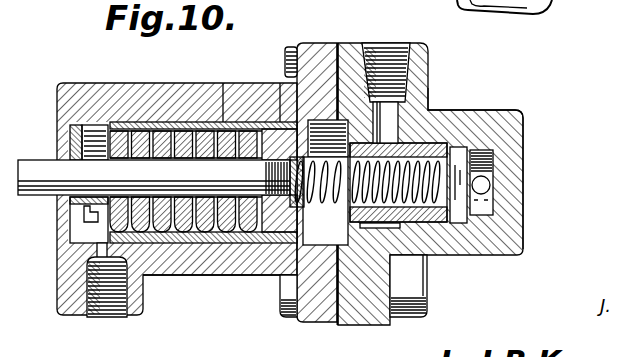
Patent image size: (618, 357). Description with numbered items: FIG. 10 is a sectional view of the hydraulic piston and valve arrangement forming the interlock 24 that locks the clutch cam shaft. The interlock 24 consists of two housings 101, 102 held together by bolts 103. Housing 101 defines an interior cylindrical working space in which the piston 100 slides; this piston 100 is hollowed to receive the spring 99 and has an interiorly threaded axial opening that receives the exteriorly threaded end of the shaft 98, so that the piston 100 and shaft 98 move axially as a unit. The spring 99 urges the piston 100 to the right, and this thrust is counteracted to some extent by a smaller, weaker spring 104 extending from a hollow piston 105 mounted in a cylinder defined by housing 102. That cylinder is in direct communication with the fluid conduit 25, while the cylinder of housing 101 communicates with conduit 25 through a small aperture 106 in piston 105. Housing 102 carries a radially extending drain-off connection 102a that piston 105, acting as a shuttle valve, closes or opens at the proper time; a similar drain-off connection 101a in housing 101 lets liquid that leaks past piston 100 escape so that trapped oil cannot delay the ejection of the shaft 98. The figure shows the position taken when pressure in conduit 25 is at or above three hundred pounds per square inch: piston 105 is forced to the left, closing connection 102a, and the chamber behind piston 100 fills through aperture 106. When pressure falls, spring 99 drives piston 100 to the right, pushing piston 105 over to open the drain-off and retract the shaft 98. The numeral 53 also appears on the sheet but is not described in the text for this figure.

The shaft 98 is at (25, 160).
The spring 99 is at (228, 83).
The piston 100 is at (282, 83).
The housing 101 is at (152, 73).
The drain-off connection 101a is at (92, 318).
The housing 102 is at (425, 88).
The drain-off connection 102a is at (388, 50).
The bolts 103 is at (286, 318).
The spring 104 is at (433, 257).
The hollow piston 105 is at (435, 110).
The aperture 106 is at (476, 112).
The interlock 24 is at (213, 278).
The fluid conduit 25 is at (492, 185).
The cover 53 is at (456, 3).